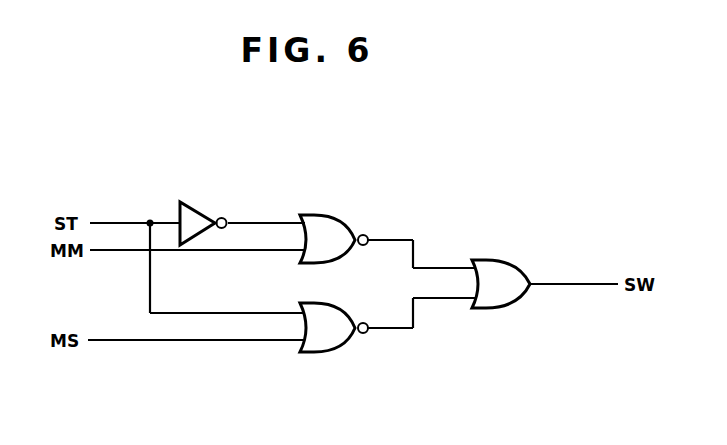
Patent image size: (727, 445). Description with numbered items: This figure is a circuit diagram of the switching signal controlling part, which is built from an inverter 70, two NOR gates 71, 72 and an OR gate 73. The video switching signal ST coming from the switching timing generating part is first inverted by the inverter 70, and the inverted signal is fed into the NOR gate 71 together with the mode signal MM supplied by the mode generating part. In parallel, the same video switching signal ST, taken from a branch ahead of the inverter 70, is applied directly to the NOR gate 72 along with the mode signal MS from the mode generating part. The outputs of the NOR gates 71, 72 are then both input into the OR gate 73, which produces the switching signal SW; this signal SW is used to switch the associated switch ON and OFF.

The inverter 70 is at (193, 201).
The NOR gate 71 is at (325, 214).
The NOR gate 72 is at (325, 353).
The OR gate 73 is at (491, 259).